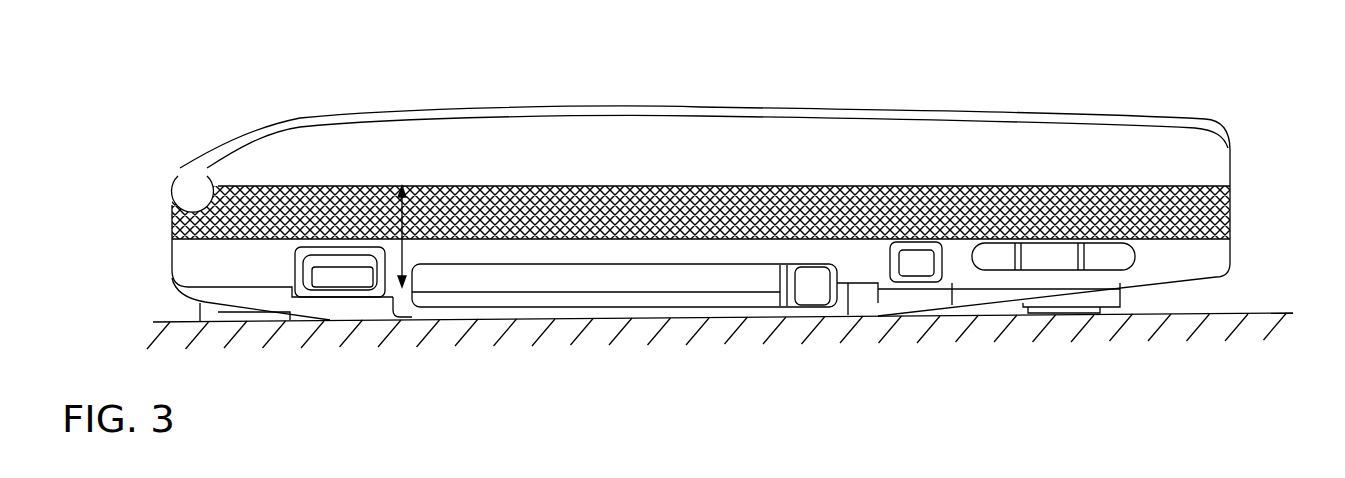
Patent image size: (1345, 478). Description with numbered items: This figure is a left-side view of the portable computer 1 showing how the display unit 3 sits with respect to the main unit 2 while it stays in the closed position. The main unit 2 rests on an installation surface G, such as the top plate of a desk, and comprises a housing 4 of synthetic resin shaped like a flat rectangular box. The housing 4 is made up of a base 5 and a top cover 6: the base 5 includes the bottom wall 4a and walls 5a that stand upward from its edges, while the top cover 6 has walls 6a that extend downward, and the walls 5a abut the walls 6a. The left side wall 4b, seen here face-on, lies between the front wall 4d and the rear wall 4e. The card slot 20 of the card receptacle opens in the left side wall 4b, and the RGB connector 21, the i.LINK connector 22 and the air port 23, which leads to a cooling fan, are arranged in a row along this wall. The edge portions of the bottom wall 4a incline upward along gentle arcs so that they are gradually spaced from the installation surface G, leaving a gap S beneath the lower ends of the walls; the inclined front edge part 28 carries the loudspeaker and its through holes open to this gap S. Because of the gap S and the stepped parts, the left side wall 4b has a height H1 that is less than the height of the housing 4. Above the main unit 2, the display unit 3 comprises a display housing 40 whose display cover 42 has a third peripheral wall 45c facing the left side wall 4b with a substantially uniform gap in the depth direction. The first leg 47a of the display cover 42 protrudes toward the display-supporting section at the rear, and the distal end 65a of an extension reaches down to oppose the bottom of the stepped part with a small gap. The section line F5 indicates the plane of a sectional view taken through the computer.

The portable computer 1 is at (715, 224).
The main unit 2 is at (615, 335).
The display unit 3 is at (705, 113).
The housing 4 is at (715, 277).
The bottom wall 4a is at (998, 300).
The left side wall 4b is at (737, 255).
The front wall 4d is at (1230, 196).
The rear wall 4e is at (170, 256).
The base 5 is at (1220, 250).
The walls 5a is at (860, 268).
The top cover 6 is at (1220, 213).
The walls 6a is at (985, 184).
The card slot 20 is at (632, 300).
The RGB connector 21 is at (340, 270).
The i.LINK (IEEE1394) connector 22 is at (918, 268).
The air port 23 is at (1055, 258).
The inclined front edge part 28 is at (205, 325).
The display housing 40 is at (1078, 117).
The display cover 42 is at (461, 128).
The third peripheral wall 45c is at (896, 130).
The first leg 47a is at (200, 177).
The distal end 65a is at (690, 184).
The height of left side wall H1 is at (389, 219).
The gap S is at (185, 310).
The installation surface G is at (1265, 313).
The section line for FIG. 5 F5 is at (517, 100).